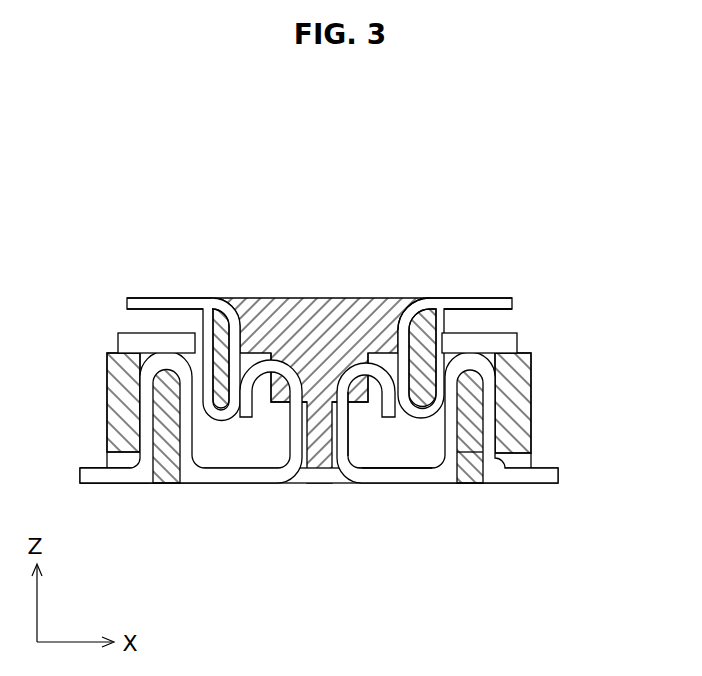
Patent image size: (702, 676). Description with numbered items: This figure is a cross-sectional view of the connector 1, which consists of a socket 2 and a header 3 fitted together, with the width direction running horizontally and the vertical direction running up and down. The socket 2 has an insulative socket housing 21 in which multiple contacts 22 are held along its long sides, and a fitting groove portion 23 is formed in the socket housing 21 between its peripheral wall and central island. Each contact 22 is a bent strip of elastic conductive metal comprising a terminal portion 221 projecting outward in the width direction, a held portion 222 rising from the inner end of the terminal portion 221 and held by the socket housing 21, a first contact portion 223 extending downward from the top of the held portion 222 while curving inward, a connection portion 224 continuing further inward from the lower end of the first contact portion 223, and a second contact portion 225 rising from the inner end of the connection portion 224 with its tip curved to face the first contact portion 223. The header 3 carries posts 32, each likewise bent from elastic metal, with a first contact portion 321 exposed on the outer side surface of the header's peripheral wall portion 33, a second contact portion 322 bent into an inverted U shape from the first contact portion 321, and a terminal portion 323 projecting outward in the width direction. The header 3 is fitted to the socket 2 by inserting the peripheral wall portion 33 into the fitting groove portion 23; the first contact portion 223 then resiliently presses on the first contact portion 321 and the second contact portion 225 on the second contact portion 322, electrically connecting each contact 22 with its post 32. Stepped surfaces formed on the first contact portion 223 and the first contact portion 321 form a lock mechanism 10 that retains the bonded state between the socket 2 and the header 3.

The connector 1 is at (516, 202).
The socket 2 is at (171, 498).
The header 3 is at (270, 290).
The lock mechanism 10 is at (186, 401).
The socket housing 21 is at (113, 380).
The contact 22 is at (202, 486).
The fitting groove portion 23 is at (238, 427).
The post 32 is at (170, 294).
The peripheral wall portion 33 is at (417, 318).
The terminal portion 221 is at (535, 484).
The held portion 222 is at (527, 434).
The first contact portion 223 is at (465, 452).
The connection portion 224 is at (383, 470).
The second contact portion 225 is at (363, 412).
The first contact portion 321 is at (195, 350).
The second contact portion 322 is at (212, 335).
The terminal portion 323 is at (137, 298).